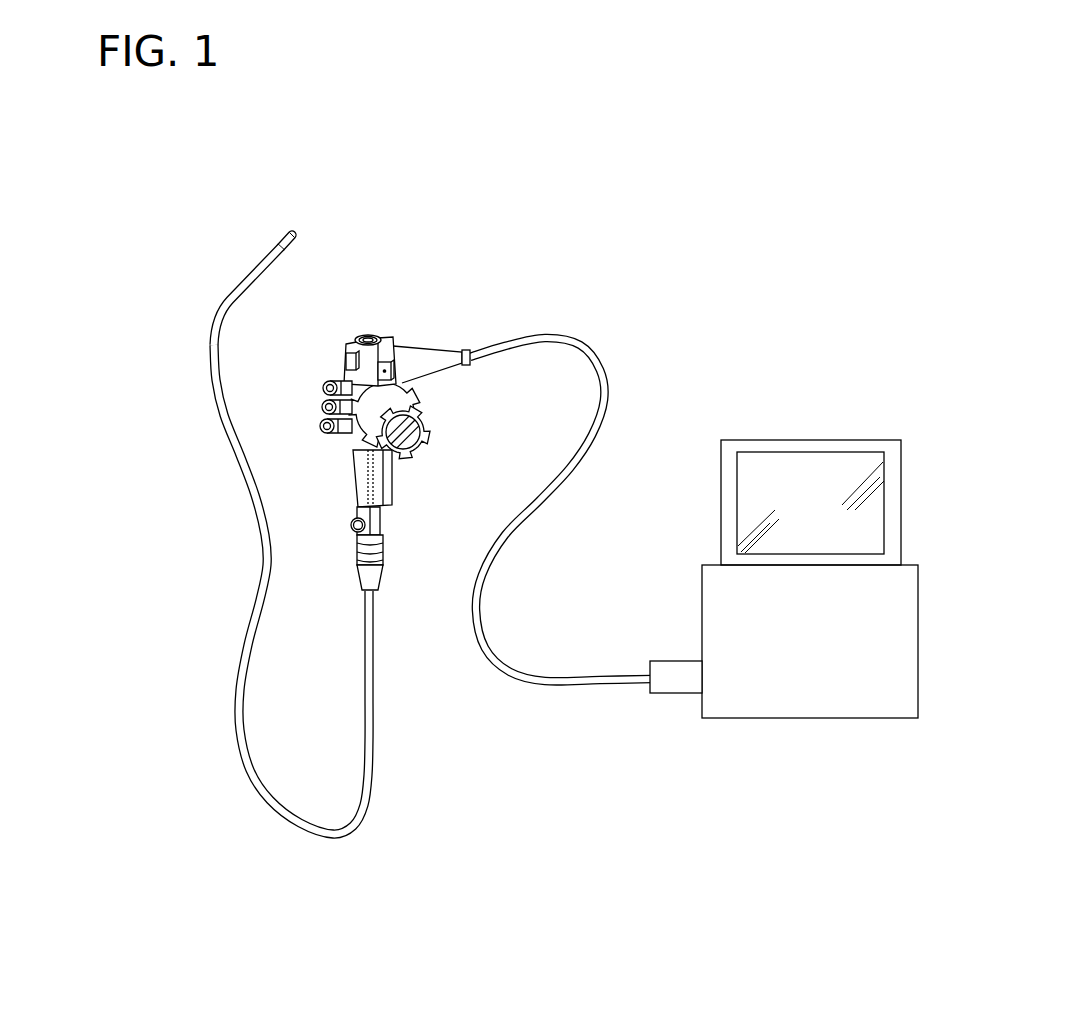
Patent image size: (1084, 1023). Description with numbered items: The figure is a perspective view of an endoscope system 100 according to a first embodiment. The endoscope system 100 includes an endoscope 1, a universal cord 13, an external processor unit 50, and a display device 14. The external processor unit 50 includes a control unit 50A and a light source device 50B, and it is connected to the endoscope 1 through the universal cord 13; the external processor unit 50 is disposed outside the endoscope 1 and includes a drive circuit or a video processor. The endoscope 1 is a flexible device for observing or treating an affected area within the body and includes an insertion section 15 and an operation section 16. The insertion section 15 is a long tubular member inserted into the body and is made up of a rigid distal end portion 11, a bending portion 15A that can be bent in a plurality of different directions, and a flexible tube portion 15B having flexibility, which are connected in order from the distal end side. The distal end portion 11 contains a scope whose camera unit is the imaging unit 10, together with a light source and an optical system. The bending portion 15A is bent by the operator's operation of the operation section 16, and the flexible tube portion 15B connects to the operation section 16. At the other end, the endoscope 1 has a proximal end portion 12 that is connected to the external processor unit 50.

The endoscope system 100 is at (683, 208).
The endoscope 1 is at (500, 226).
The imaging unit 10 is at (294, 232).
The distal end portion 11 is at (252, 243).
The insertion section 15 is at (128, 193).
The bending portion 15A is at (222, 296).
The flexible tube portion 15B is at (224, 456).
The proximal end portion 12 is at (378, 606).
The universal cord 13 is at (545, 337).
The operation section 16 is at (378, 320).
The external processor unit 50 is at (598, 535).
The control unit 50A is at (702, 614).
The light source device 50B is at (683, 660).
The display device 14 is at (808, 440).